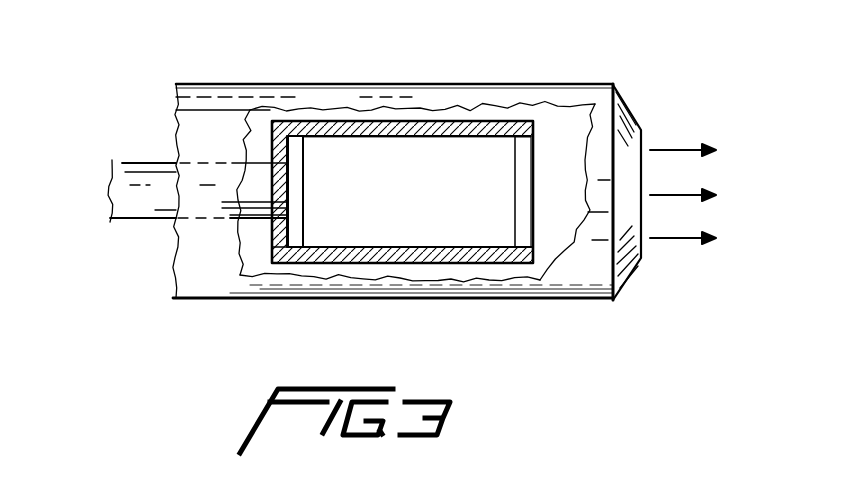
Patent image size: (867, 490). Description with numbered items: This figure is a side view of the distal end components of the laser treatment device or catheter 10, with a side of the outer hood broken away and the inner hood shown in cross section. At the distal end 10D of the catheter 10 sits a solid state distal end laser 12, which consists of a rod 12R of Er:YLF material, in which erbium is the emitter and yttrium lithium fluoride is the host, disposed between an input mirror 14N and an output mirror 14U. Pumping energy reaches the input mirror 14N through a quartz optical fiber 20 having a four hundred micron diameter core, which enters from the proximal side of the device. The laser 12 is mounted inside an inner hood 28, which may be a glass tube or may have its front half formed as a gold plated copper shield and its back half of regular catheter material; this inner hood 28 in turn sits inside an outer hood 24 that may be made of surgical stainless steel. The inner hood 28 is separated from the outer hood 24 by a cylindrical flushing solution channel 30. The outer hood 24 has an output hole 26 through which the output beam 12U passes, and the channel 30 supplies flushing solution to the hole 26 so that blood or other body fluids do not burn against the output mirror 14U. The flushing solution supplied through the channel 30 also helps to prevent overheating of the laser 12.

The laser treatment device or catheter 10 is at (491, 354).
The distal end 10D is at (232, 83).
The solid state distal end laser 12 is at (429, 196).
The rod 12R is at (387, 160).
The output beam 12U is at (682, 193).
The input mirror 14N is at (303, 167).
The output mirror 14U is at (528, 157).
The quartz optical fiber 20 is at (125, 220).
The outer hood 24 is at (553, 302).
The output hole 26 is at (642, 258).
The inner hood 28 is at (333, 253).
The cylindrical flushing solution channel 30 is at (347, 113).